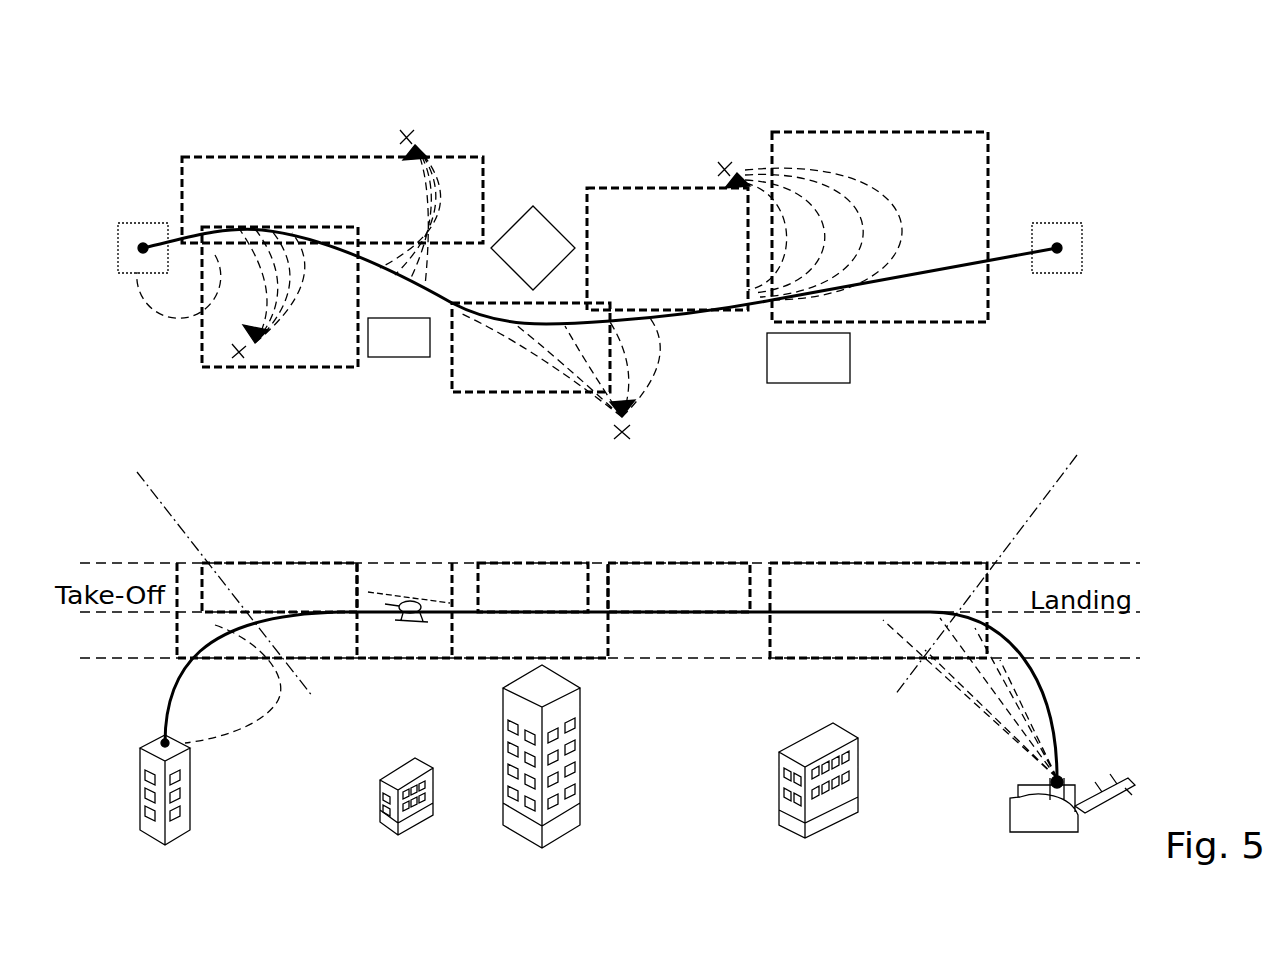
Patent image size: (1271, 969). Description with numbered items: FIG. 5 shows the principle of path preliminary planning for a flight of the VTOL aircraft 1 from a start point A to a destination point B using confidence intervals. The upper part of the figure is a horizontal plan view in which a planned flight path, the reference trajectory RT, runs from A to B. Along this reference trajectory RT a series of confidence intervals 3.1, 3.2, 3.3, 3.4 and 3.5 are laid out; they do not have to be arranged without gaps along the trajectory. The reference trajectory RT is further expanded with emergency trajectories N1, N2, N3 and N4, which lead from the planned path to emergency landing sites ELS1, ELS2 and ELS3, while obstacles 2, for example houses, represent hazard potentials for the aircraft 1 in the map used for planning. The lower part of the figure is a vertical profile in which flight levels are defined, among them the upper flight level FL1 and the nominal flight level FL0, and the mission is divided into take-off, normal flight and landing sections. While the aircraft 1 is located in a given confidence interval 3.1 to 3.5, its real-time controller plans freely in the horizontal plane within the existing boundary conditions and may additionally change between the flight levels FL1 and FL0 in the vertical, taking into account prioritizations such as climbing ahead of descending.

The VTOL aircraft 1 is at (400, 600).
The obstacles 2 is at (790, 383).
The confidence interval 3.1 is at (205, 183).
The confidence interval 3.2 is at (200, 347).
The confidence interval 3.3 is at (470, 392).
The confidence interval 3.4 is at (617, 203).
The confidence interval 3.5 is at (970, 158).
The start point A is at (135, 527).
The destination point B is at (1072, 527).
The reference trajectory RT is at (970, 268).
The emergency trajectory N1 is at (147, 300).
The emergency trajectory N2 is at (657, 398).
The emergency trajectory N3 is at (745, 150).
The emergency trajectory N4 is at (960, 683).
The emergency landing site ELS1 is at (260, 318).
The emergency landing site ELS2 is at (520, 292).
The emergency landing site ELS3 is at (782, 217).
The flight level FL1 is at (638, 619).
The flight level FL0 is at (638, 620).